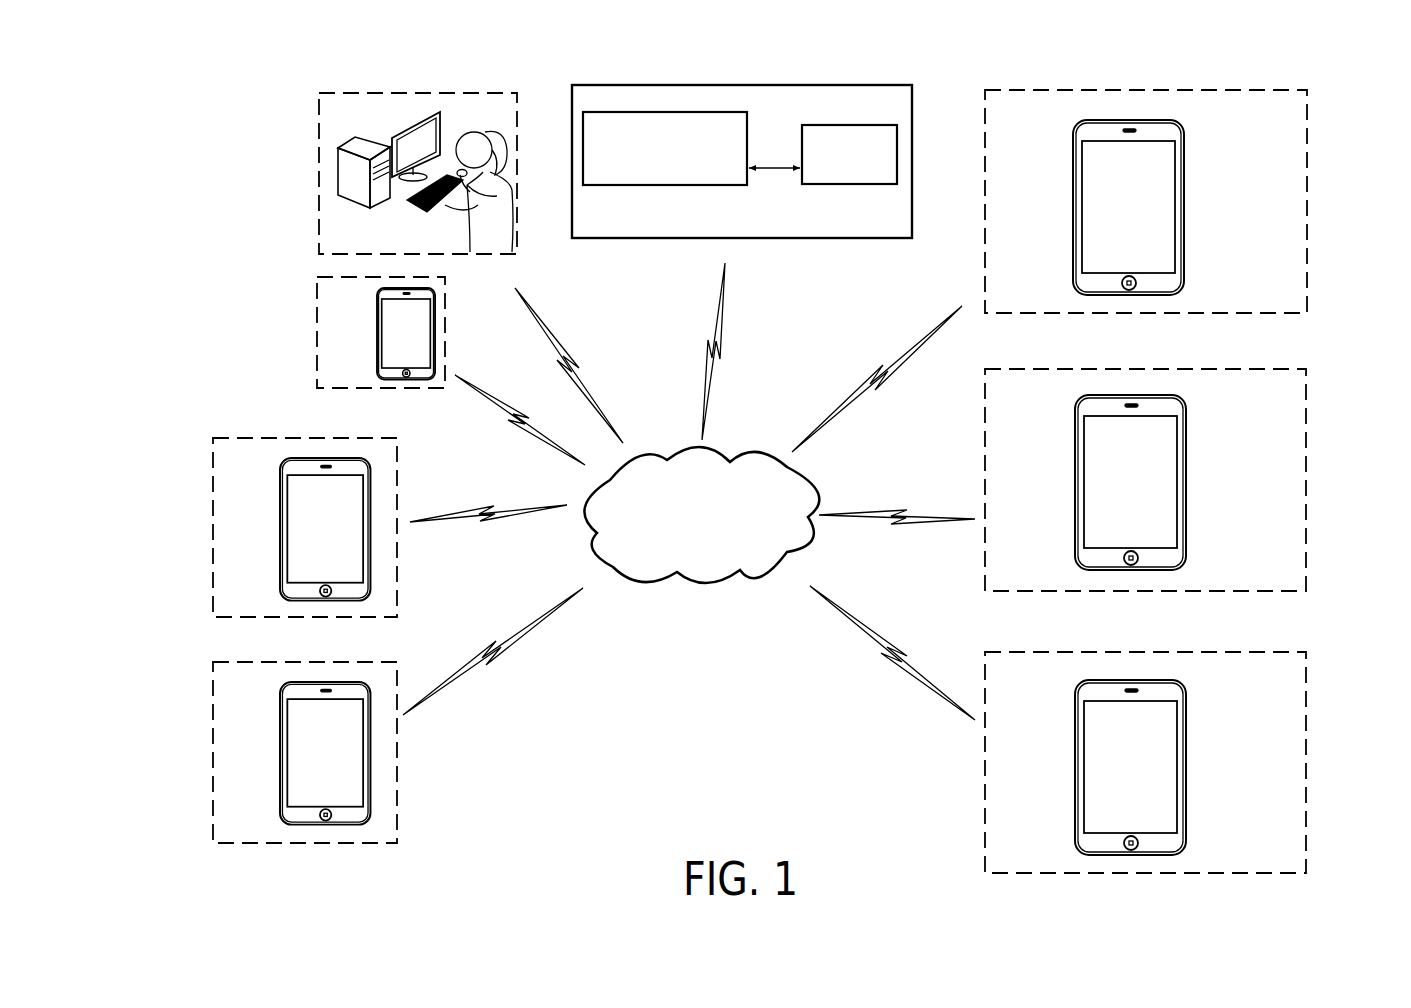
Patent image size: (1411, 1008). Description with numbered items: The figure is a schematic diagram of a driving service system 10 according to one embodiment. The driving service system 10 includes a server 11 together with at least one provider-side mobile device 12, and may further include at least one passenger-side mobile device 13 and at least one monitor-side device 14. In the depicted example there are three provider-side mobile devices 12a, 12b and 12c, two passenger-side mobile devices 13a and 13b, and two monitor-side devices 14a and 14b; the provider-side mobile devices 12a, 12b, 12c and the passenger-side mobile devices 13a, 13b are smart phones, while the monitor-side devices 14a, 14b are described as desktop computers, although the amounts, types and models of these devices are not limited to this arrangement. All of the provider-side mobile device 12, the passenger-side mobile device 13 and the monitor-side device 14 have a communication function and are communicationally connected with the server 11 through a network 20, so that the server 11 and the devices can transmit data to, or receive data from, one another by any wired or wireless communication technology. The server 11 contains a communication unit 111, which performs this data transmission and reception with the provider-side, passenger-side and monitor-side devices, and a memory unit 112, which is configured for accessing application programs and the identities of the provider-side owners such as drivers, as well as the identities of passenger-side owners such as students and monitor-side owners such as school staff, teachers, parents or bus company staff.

The driving service system 10 is at (197, 78).
The server 11 is at (793, 85).
The communication unit 111 is at (667, 185).
The memory unit 112 is at (815, 185).
The provider-side mobile device 12 is at (1330, 769).
The provider-side mobile device 12a is at (1147, 118).
The provider-side mobile device 12b is at (1147, 395).
The provider-side mobile device 12c is at (1147, 680).
The passenger-side mobile device 13 is at (203, 505).
The passenger-side mobile device 13a is at (280, 533).
The passenger-side mobile device 13b is at (280, 758).
The monitor-side device 14 is at (310, 127).
The monitor-side device 14a is at (425, 115).
The monitor-side device 14b is at (377, 333).
The network 20 is at (713, 448).